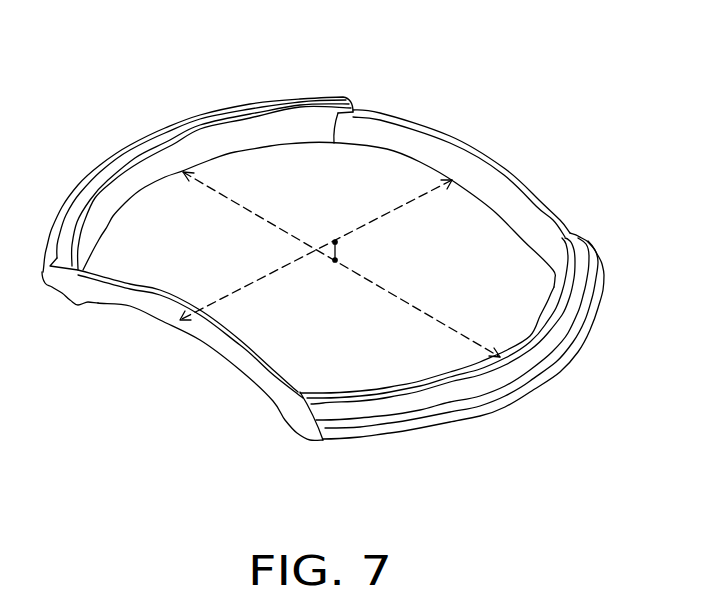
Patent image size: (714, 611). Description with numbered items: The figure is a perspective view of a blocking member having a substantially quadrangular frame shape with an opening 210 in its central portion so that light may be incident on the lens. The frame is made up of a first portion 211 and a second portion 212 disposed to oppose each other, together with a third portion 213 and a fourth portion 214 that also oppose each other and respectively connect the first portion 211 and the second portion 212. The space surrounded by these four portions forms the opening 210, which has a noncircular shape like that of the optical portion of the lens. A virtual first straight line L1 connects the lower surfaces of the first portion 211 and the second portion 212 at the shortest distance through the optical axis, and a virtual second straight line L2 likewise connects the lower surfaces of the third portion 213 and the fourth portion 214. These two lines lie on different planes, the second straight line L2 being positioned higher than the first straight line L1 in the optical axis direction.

The opening 210 is at (232, 284).
The first portion 211 is at (250, 137).
The second portion 212 is at (548, 358).
The third portion 213 is at (132, 283).
The fourth portion 214 is at (496, 168).
The first straight line L1 is at (402, 297).
The second straight line L2 is at (377, 217).